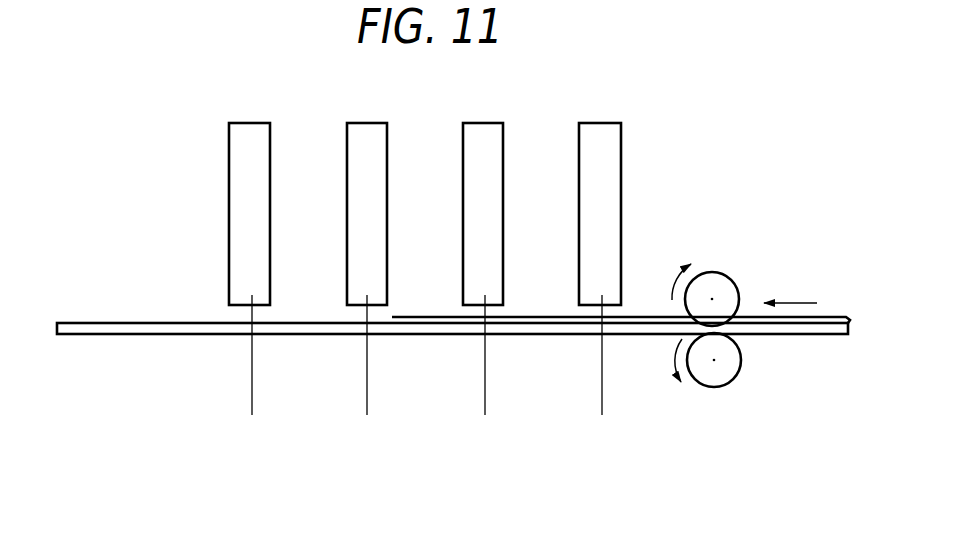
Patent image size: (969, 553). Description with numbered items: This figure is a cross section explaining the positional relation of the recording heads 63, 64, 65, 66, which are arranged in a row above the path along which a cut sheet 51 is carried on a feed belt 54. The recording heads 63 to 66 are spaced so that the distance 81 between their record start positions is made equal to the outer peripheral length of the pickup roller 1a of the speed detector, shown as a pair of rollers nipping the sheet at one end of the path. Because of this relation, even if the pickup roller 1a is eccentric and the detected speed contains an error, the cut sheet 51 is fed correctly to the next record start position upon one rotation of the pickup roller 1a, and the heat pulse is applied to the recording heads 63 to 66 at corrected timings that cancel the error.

The pair of feed rollers 1a is at (717, 272).
The cut sheet 51 is at (820, 316).
The feed belt 54 is at (140, 323).
The recording head 63 is at (259, 123).
The recording head 64 is at (377, 123).
The recording head 65 is at (489, 123).
The recording head 66 is at (605, 123).
The distance between record start positions 81 is at (253, 403).